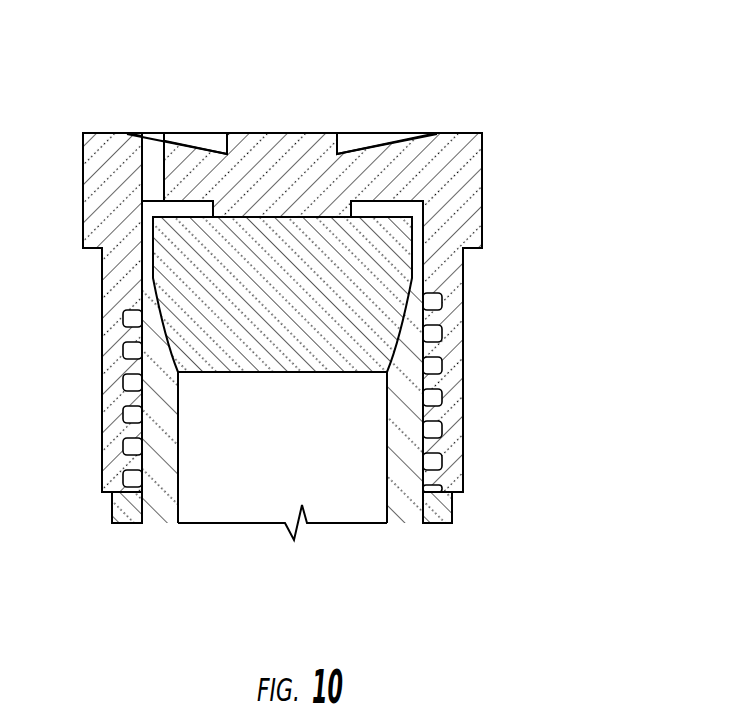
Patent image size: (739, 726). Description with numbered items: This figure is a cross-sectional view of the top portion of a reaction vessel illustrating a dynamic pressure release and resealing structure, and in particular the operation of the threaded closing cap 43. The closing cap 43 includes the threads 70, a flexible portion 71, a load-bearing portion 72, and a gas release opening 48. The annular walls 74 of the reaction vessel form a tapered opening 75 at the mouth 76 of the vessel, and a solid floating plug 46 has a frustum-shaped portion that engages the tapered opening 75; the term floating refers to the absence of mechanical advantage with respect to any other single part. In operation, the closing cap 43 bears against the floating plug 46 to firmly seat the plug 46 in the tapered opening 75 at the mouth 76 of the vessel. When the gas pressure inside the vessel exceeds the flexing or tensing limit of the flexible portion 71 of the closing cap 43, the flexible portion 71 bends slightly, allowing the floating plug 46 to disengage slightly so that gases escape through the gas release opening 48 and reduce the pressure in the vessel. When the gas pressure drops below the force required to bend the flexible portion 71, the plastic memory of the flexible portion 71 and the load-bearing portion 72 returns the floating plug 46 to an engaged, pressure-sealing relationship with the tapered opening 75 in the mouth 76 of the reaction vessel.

The threaded closing cap 43 is at (475, 174).
The floating plug 46 is at (302, 310).
The gas release opening 48 is at (157, 138).
The threads 70 is at (437, 391).
The flexible portion 71 is at (394, 160).
The load-bearing portion 72 is at (258, 150).
The annular walls 74 is at (403, 504).
The tapered opening 75 is at (157, 322).
The mouth 76 is at (243, 420).